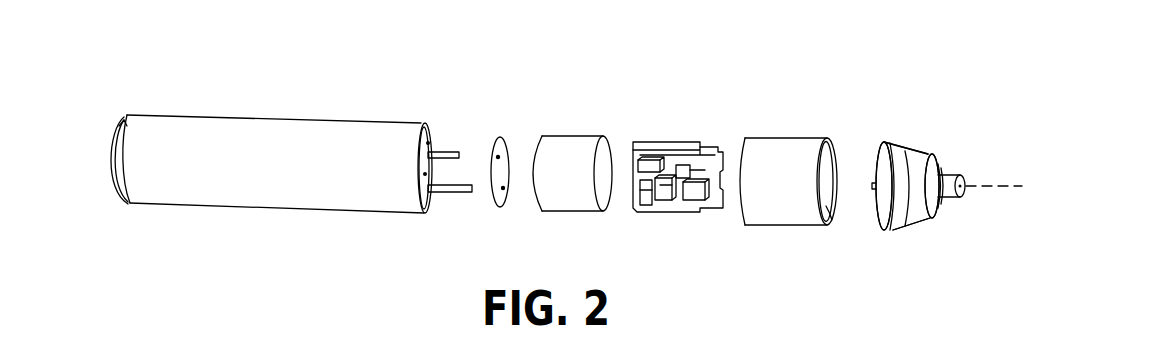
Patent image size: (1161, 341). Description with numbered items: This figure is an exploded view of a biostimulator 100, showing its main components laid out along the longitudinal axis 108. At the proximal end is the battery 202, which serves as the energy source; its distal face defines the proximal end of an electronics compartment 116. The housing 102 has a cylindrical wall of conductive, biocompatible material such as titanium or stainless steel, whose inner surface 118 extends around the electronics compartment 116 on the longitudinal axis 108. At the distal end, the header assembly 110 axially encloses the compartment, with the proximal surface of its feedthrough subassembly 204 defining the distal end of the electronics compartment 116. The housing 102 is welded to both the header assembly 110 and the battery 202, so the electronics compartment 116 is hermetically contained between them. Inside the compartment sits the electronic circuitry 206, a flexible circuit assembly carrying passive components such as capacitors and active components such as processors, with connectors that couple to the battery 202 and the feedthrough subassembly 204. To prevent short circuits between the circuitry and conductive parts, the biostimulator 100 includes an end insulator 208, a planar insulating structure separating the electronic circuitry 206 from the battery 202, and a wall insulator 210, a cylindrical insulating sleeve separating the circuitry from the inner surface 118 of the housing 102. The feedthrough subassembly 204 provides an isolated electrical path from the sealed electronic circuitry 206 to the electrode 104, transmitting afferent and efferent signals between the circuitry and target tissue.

The biostimulator 100 is at (447, 47).
The battery 202 is at (218, 115).
The end insulator 208 is at (500, 140).
The wall insulator 210 is at (575, 140).
The electronic circuitry 206 is at (680, 141).
The housing 102 is at (781, 138).
The inner surface 118 is at (829, 158).
The electronics compartment 116 is at (836, 214).
The header assembly 110 is at (902, 134).
The feedthrough subassembly 204 is at (907, 186).
The electrode 104 is at (950, 198).
The longitudinal axis 108 is at (977, 185).